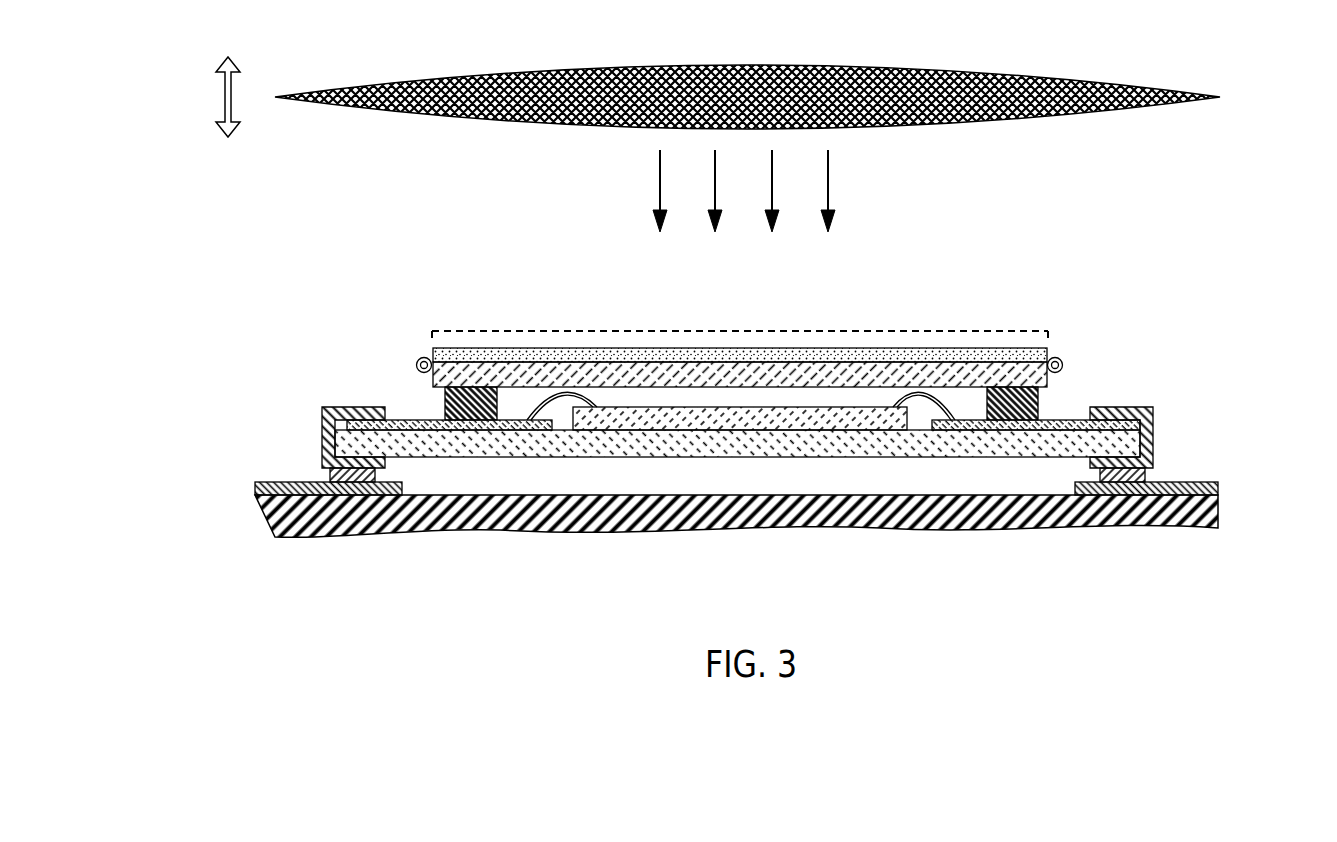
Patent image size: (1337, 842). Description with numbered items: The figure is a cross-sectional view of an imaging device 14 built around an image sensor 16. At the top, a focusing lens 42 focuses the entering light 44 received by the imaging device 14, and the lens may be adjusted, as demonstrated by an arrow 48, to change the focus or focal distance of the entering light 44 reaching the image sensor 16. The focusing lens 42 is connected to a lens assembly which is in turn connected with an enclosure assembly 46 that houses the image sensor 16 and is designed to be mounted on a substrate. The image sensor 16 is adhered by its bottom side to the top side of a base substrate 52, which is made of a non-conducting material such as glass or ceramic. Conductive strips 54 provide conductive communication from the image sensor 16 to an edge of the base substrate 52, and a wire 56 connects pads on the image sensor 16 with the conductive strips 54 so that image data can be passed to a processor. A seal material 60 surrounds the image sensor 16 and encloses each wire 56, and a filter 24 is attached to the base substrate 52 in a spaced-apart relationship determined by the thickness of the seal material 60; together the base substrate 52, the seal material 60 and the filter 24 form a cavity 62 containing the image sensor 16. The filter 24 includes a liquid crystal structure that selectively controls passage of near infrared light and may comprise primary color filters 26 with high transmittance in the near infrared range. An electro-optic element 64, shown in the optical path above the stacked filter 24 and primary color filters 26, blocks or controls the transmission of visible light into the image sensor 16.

The imaging device 14 is at (1145, 232).
The image sensor 16 is at (748, 408).
The filter 24 is at (820, 351).
The primary color filters 26 is at (548, 376).
The focusing lens 42 is at (1073, 78).
The entering light 44 is at (829, 183).
The enclosure assembly 46 is at (1218, 513).
The arrow 48 is at (222, 92).
The base substrate 52 is at (700, 457).
The conductive strips 54 is at (968, 398).
The wire 56 is at (920, 393).
The seal material 60 is at (1040, 398).
The cavity 62 is at (650, 398).
The electro-optic element 64 is at (996, 335).